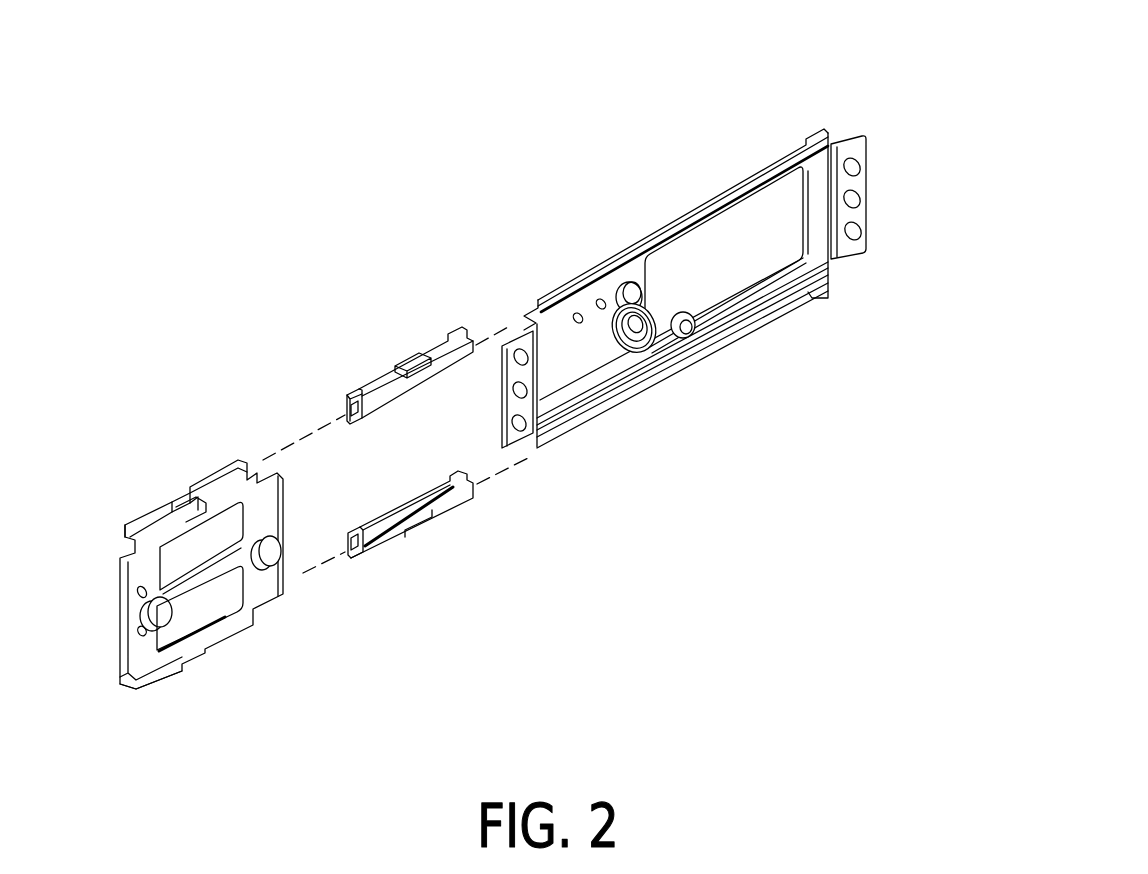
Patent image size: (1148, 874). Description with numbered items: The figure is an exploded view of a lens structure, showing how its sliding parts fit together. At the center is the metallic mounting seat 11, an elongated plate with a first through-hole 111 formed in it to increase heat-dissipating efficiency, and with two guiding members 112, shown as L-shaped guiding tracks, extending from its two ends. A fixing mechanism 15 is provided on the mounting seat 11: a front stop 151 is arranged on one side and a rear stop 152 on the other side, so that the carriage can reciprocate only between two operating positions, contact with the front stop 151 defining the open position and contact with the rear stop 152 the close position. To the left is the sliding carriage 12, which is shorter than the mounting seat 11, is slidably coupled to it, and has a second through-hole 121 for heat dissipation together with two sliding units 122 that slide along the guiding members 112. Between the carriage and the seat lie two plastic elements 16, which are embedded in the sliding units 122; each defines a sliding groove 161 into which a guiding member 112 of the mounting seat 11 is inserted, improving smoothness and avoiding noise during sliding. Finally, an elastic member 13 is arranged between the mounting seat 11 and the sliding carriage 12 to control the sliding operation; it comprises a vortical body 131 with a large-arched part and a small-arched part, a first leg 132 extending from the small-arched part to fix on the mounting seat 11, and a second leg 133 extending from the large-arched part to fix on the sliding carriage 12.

The mounting seat 11 is at (676, 321).
The first through-hole 111 is at (706, 272).
The guiding member 112 is at (722, 190).
The sliding carriage 12 is at (194, 581).
The second through-hole 121 is at (189, 548).
The sliding unit 122 is at (225, 475).
The elastic member 13 is at (635, 410).
The vortical body 131 is at (632, 354).
The first leg 132 is at (615, 303).
The second leg 133 is at (680, 338).
The fixing mechanism 15 is at (675, 229).
The front stop 151 is at (838, 145).
The rear stop 152 is at (513, 337).
The plastic element 16 is at (407, 439).
The sliding groove 161 is at (354, 418).